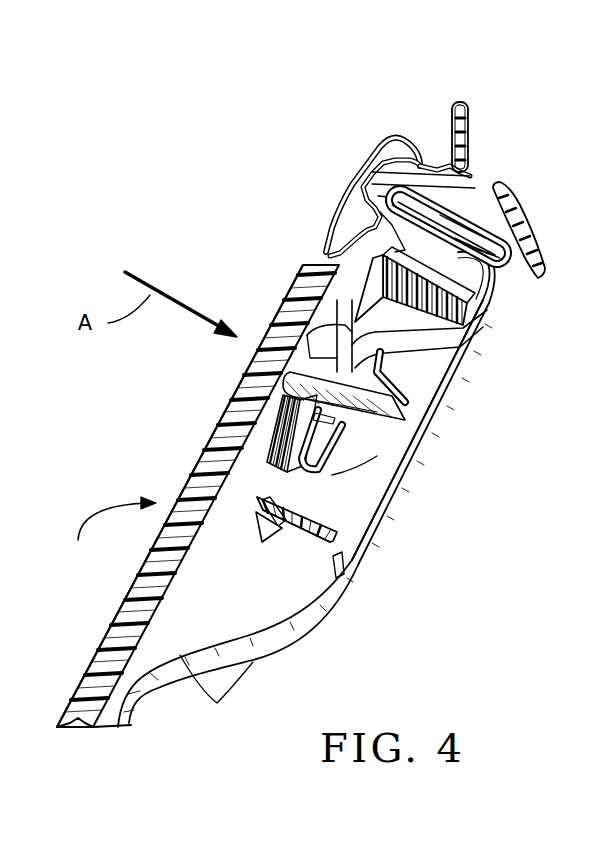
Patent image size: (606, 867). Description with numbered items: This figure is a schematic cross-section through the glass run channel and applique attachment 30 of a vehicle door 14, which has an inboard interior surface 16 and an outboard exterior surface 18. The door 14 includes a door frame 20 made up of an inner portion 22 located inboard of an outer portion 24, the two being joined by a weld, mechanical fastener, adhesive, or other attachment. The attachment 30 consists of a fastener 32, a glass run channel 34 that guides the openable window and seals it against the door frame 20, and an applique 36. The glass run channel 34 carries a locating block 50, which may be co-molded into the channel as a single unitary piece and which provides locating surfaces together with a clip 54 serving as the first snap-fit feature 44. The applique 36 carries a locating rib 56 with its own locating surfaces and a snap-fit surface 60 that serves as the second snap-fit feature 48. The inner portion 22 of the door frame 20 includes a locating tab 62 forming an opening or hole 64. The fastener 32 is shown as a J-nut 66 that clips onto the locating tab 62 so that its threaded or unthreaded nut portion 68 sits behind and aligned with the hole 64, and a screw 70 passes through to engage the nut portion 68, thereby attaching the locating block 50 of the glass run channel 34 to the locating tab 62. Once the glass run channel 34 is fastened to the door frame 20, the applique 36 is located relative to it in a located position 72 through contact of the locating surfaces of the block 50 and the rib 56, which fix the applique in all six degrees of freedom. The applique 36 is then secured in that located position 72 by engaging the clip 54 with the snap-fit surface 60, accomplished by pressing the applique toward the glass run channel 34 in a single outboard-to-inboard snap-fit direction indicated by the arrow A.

The door 14 is at (375, 124).
The interior surface 16 is at (408, 432).
The exterior surface 18 is at (187, 483).
The door frame 20 is at (216, 691).
The inner portion 22 is at (517, 303).
The outer portion 24 is at (487, 318).
The glass run channel and applique attachment 30 is at (326, 198).
The fastener 32 is at (398, 440).
The glass run channel 34 is at (520, 211).
The applique 36 is at (222, 442).
The first snap-fit feature 44 is at (338, 578).
The second snap-fit feature 48 is at (286, 515).
The locating block 50 is at (350, 330).
The clip 54 is at (287, 508).
The locating rib 56 is at (250, 540).
The snap-fit surface 60 is at (262, 543).
The locating tab 62 is at (390, 358).
The opening or hole 64 is at (337, 370).
The J-nut 66 is at (365, 470).
The nut portion 68 is at (412, 390).
The screw 70 is at (380, 418).
The located position 72 is at (109, 532).